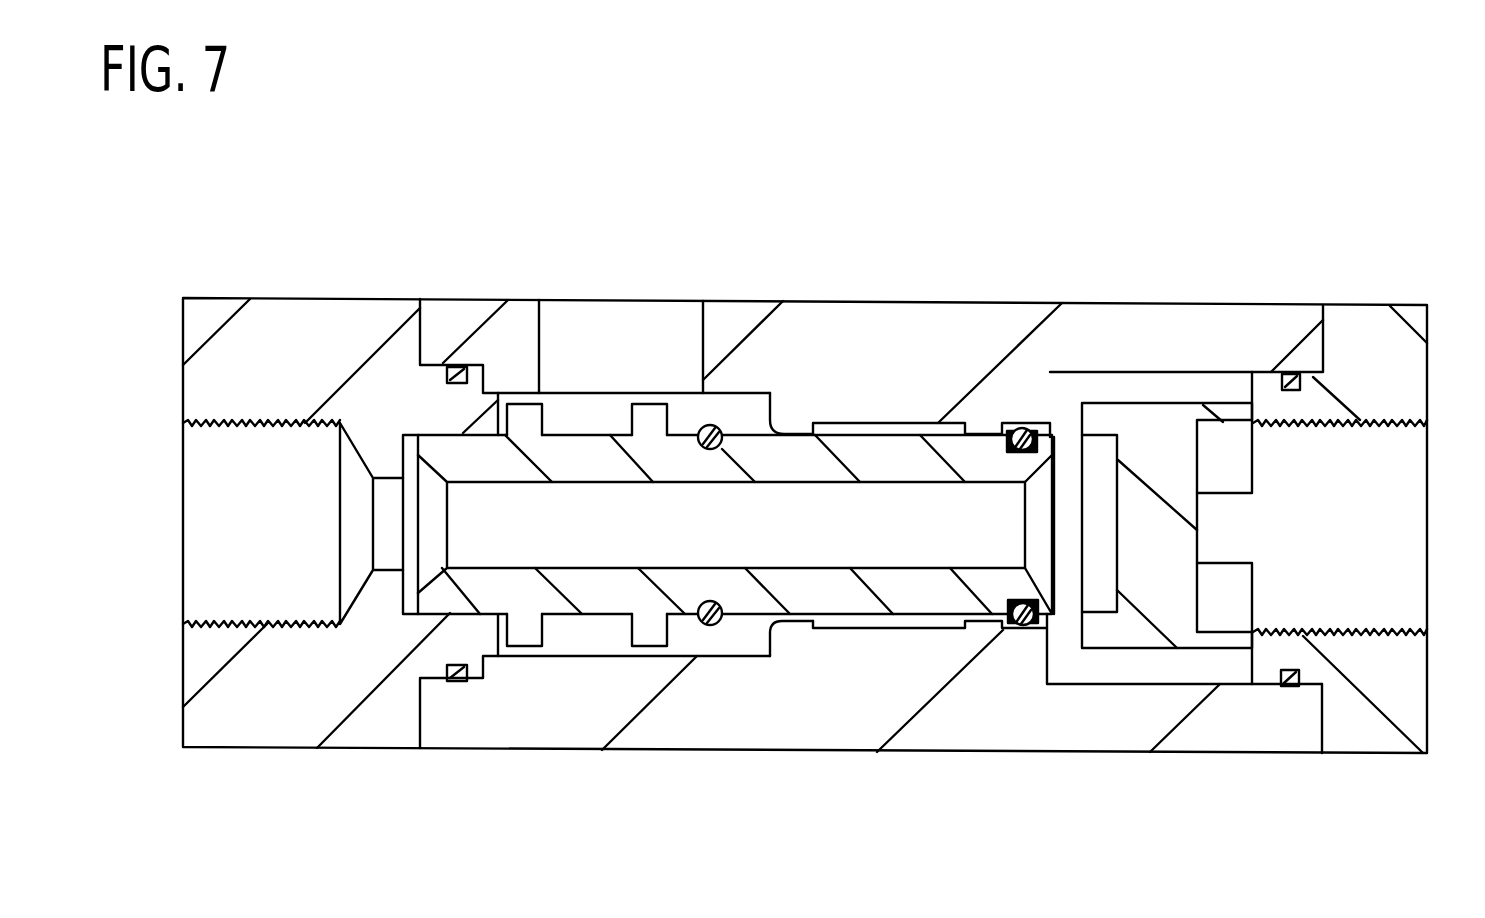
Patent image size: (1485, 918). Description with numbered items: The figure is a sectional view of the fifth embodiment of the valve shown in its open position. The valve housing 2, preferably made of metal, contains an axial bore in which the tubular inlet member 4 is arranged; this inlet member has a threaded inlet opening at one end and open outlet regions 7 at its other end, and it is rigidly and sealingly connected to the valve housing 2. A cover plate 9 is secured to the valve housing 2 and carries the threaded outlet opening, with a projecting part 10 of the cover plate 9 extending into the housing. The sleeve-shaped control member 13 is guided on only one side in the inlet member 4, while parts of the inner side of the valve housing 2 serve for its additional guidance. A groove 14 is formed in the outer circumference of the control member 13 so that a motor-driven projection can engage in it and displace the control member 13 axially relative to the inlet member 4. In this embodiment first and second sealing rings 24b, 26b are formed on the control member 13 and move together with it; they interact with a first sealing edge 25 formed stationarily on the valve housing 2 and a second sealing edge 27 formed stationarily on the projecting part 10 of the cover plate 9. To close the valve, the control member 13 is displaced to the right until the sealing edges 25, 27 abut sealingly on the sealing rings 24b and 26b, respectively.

The valve housing 2 is at (783, 737).
The tubular inlet member 4 is at (285, 732).
The outlet regions 7 is at (1224, 456).
The cover plate 9 is at (1388, 352).
The projecting part of the cover plate 10 is at (1145, 605).
The sleeve-shaped control member 13 is at (600, 605).
The groove 14 is at (543, 418).
The first sealing ring 24b is at (713, 432).
The first sealing edge 25 is at (761, 417).
The second sealing ring 26b is at (1020, 430).
The second sealing edge 27 is at (1085, 435).